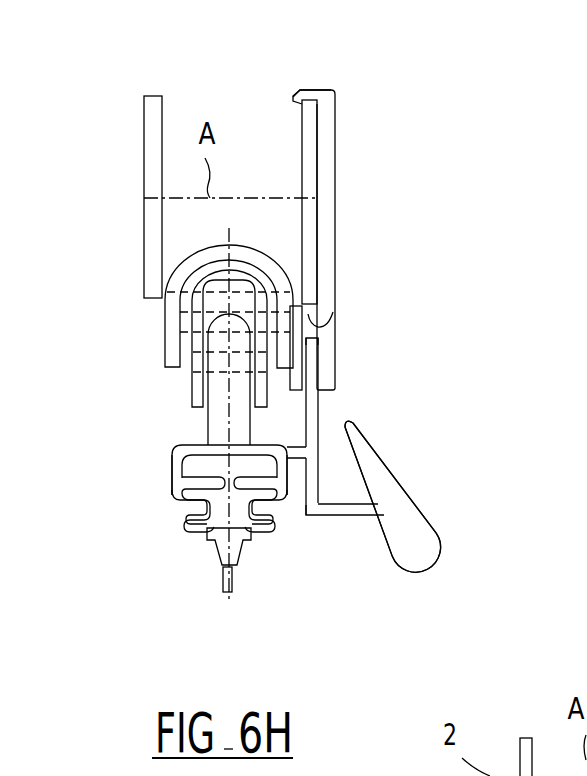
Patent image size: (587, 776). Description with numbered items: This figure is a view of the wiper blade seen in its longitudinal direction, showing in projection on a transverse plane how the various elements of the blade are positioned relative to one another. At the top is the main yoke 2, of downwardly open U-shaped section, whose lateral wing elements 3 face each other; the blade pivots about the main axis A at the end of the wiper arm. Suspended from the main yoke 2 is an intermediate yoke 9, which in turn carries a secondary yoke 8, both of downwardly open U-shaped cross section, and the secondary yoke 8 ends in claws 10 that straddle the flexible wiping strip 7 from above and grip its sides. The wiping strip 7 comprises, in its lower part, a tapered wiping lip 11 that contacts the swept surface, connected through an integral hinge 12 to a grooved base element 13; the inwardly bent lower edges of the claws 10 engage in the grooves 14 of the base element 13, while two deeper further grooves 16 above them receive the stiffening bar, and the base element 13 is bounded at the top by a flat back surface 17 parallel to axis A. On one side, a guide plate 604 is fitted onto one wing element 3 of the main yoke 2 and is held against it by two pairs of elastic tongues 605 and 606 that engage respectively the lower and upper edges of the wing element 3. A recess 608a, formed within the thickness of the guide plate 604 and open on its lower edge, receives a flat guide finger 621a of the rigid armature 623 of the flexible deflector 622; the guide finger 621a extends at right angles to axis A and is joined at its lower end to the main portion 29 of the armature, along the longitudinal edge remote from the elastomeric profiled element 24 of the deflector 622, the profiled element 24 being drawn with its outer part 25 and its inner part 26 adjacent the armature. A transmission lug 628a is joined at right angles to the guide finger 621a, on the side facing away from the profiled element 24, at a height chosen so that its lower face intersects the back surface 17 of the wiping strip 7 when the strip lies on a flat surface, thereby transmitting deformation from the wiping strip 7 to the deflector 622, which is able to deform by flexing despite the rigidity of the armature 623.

The main yoke 2 is at (150, 137).
The wing element 3 is at (307, 142).
The flexible wiping strip 7 is at (173, 446).
The secondary yoke 8 is at (208, 387).
The intermediate yoke 9 is at (197, 321).
The claw 10 is at (202, 468).
The wiping lip 11 is at (228, 586).
The hinge 12 is at (230, 456).
The grooved base element 13 is at (173, 500).
The groove 14 is at (205, 505).
The further groove 16 is at (190, 483).
The back surface 17 is at (207, 522).
The profiled element 24 is at (398, 510).
The lever knob 25 is at (433, 563).
The lever tip 26 is at (347, 420).
The main portion of the deflector armature 29 is at (358, 516).
The guide plate 604 is at (323, 220).
The pair of elastic tongues 605 is at (338, 317).
The pair of elastic tongues 606 is at (305, 90).
The recess 608a is at (310, 331).
The guide finger 621a is at (310, 405).
The flexible deflector 622 is at (436, 506).
The rigid armature 623 is at (336, 525).
The transmission lug 628a is at (293, 450).